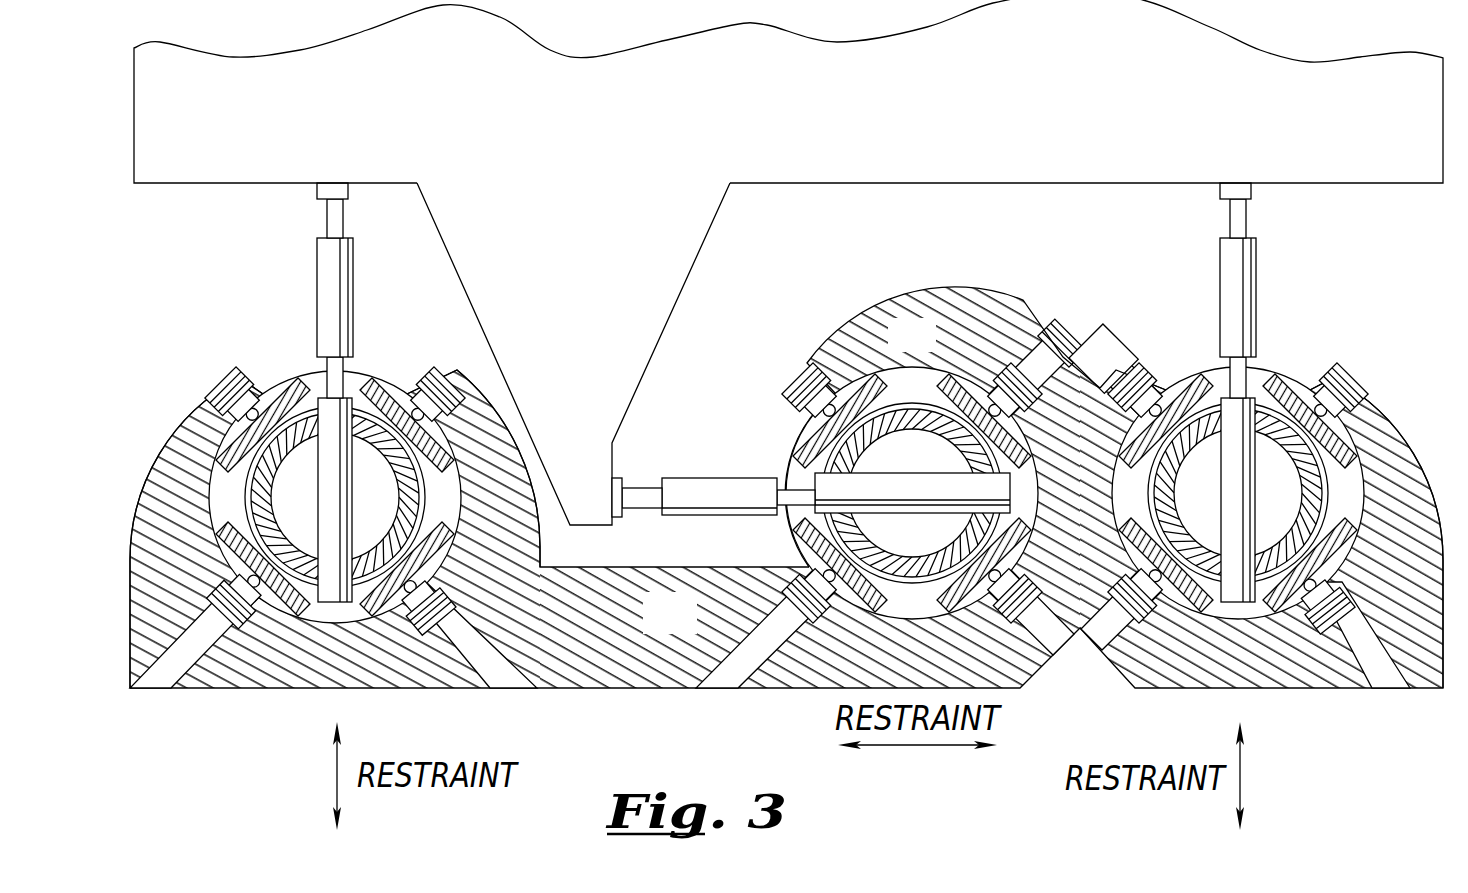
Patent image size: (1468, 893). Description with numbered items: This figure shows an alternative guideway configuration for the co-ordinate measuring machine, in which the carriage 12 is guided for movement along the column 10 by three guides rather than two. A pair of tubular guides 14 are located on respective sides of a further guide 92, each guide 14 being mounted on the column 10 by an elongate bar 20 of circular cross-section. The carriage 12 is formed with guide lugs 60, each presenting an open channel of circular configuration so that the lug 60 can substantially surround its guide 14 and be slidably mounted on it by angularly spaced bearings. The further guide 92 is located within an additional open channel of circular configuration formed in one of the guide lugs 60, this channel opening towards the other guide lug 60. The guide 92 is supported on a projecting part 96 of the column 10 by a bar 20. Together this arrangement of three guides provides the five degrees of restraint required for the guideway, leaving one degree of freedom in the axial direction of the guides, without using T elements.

The column 10 is at (898, 152).
The carriage 12 is at (690, 631).
The tubular guide 14 is at (245, 511).
The elongate bar 20 is at (353, 277).
The guide lug 60 is at (200, 397).
The further guide 92 is at (912, 493).
The projecting part 96 is at (663, 338).